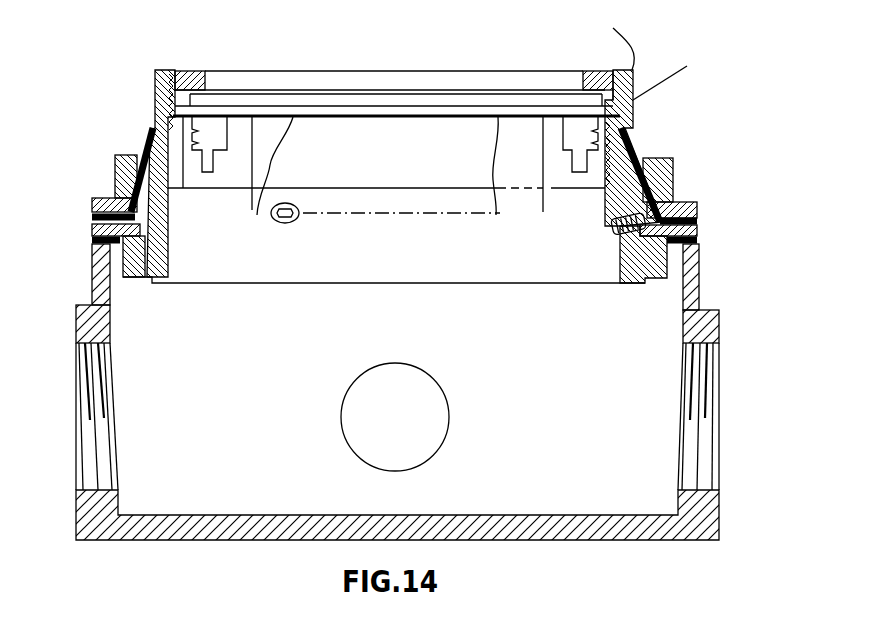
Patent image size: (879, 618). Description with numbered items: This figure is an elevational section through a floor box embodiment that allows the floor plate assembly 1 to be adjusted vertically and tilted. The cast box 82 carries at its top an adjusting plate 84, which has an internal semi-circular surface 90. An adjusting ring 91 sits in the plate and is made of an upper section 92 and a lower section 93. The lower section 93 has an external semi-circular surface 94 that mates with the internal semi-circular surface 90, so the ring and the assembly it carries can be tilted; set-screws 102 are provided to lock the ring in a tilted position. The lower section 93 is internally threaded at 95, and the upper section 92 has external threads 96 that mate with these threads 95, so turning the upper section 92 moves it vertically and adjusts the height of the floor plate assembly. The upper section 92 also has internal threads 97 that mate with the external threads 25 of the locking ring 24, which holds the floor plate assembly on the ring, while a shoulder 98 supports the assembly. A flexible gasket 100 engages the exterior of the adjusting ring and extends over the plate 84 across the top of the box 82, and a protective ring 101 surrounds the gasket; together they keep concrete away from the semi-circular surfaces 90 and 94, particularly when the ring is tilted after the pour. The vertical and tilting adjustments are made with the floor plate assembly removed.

The floor plate assembly 1 is at (366, 66).
The locking ring 24 is at (600, 71).
The external threads 25 is at (615, 36).
The internal threads 97 is at (672, 75).
The upper section 92 is at (635, 110).
The adjusting ring 91 is at (645, 124).
The flexible gasket 100 is at (676, 178).
The protective ring 101 is at (672, 203).
The adjusting plate 84 is at (663, 267).
The cast box 82 is at (712, 325).
The external threads 96 is at (608, 189).
The internal threads 95 is at (616, 193).
The set-screws 102 is at (296, 223).
The external semi-circular surface 94 is at (633, 243).
The lower section 93 is at (628, 240).
The internal semi-circular surface 90 is at (631, 288).
The shoulder 98 is at (170, 100).